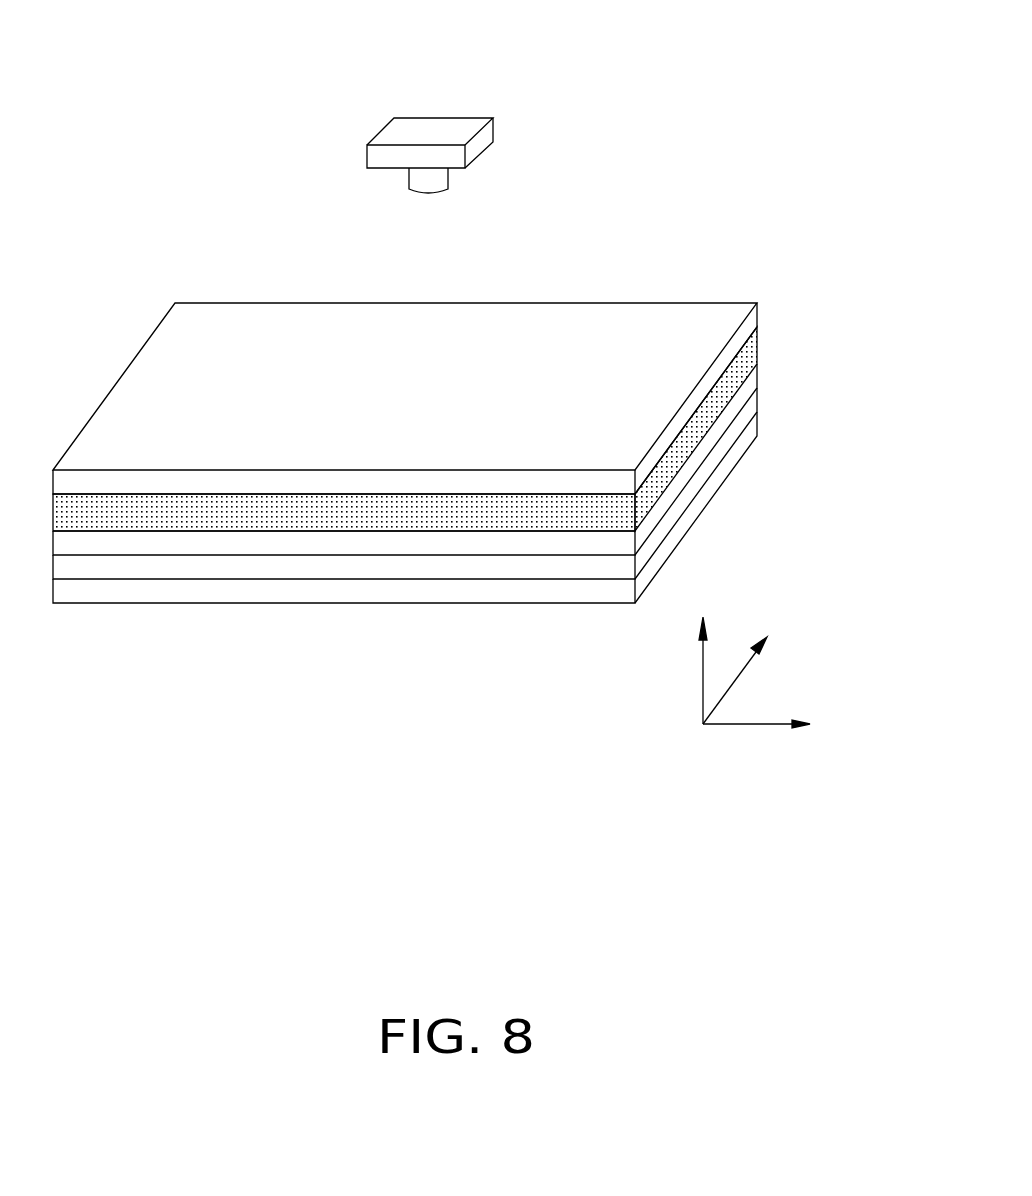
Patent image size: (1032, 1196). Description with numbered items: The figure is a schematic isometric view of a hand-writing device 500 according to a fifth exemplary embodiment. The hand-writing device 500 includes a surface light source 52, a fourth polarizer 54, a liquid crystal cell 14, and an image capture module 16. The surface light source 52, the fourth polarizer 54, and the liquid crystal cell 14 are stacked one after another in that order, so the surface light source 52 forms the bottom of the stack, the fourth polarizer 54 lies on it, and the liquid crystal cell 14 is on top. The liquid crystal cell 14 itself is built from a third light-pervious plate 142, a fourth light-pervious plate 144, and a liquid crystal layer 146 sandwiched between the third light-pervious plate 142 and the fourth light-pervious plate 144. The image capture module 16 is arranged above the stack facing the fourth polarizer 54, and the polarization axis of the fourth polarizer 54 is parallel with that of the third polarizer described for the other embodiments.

The hand-writing device 500 is at (461, 44).
The image capture module 16 is at (480, 143).
The liquid crystal cell 14 is at (471, 425).
The fourth light-pervious plate 144 is at (748, 325).
The liquid crystal layer 146 is at (748, 352).
The third light-pervious plate 142 is at (748, 390).
The fourth polarizer 54 is at (712, 458).
The surface light source 52 is at (698, 507).